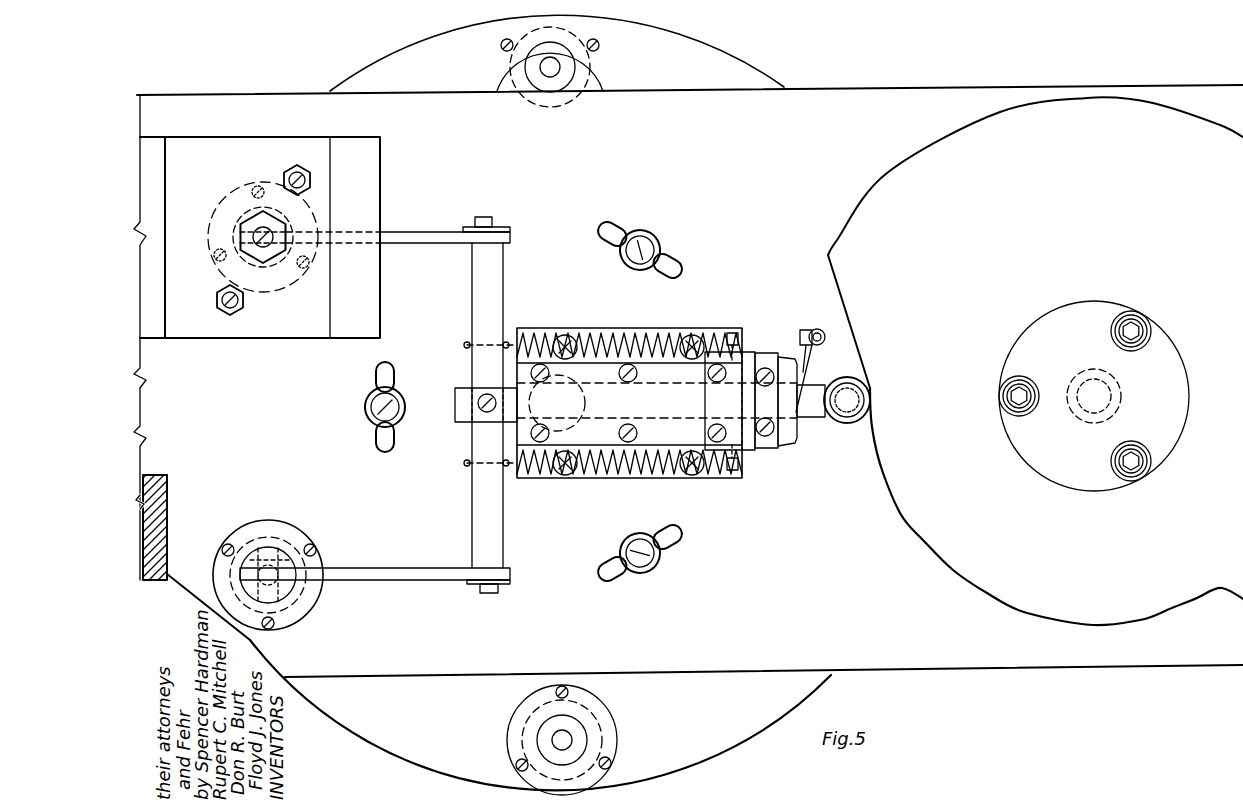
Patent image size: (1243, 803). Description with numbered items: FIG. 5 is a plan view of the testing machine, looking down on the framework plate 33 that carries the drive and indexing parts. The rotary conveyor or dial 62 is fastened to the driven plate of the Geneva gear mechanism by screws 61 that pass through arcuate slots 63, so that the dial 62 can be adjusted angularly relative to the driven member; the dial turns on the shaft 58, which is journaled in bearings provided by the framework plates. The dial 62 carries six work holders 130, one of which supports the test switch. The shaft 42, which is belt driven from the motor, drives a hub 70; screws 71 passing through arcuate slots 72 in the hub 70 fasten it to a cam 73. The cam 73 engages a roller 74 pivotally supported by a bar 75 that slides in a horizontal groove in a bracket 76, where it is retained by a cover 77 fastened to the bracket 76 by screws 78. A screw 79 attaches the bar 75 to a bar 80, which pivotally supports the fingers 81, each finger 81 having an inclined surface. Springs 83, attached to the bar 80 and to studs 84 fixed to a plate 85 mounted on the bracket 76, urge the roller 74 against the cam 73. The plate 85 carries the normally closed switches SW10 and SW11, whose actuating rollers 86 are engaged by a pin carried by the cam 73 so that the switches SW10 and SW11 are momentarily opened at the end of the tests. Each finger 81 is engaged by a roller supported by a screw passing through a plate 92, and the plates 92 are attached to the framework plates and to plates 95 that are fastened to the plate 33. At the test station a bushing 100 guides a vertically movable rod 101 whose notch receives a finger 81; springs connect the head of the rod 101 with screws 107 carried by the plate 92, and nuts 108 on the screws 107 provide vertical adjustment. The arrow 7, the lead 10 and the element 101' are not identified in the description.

The hub assembly 7 is at (210, 211).
The machine frame 10 is at (205, 607).
The plate 33 is at (990, 88).
The shaft 42 is at (1122, 395).
The shaft 58 is at (578, 383).
The screws 61 is at (366, 407).
The rotary conveyor or dial 62 is at (733, 58).
The arcuate slots 63 is at (378, 373).
The hub 70 is at (1185, 369).
The screws 71 is at (1140, 323).
The arcuate slots 72 is at (1150, 337).
The cam 73 is at (1168, 612).
The roller 74 is at (848, 424).
The bar 75 is at (801, 418).
The bracket 76 is at (645, 479).
The cover 77 is at (641, 460).
The screws 78 is at (638, 433).
The screw 79 is at (479, 402).
The bar 80 is at (504, 307).
The fingers 81 is at (416, 231).
The springs 83 is at (604, 329).
The studs 84 is at (732, 333).
The plate 85 is at (748, 352).
The actuating rollers 86 is at (824, 330).
The plate 92 is at (223, 137).
The plates 95 is at (380, 172).
The bushing 100 is at (274, 292).
The rod 101 is at (333, 217).
The hub key 101' is at (307, 544).
The screws 107 is at (312, 180).
The nuts 108 is at (297, 166).
The work holders 130 is at (608, 68).
The switch SW10 is at (797, 376).
The switch SW11 is at (830, 351).